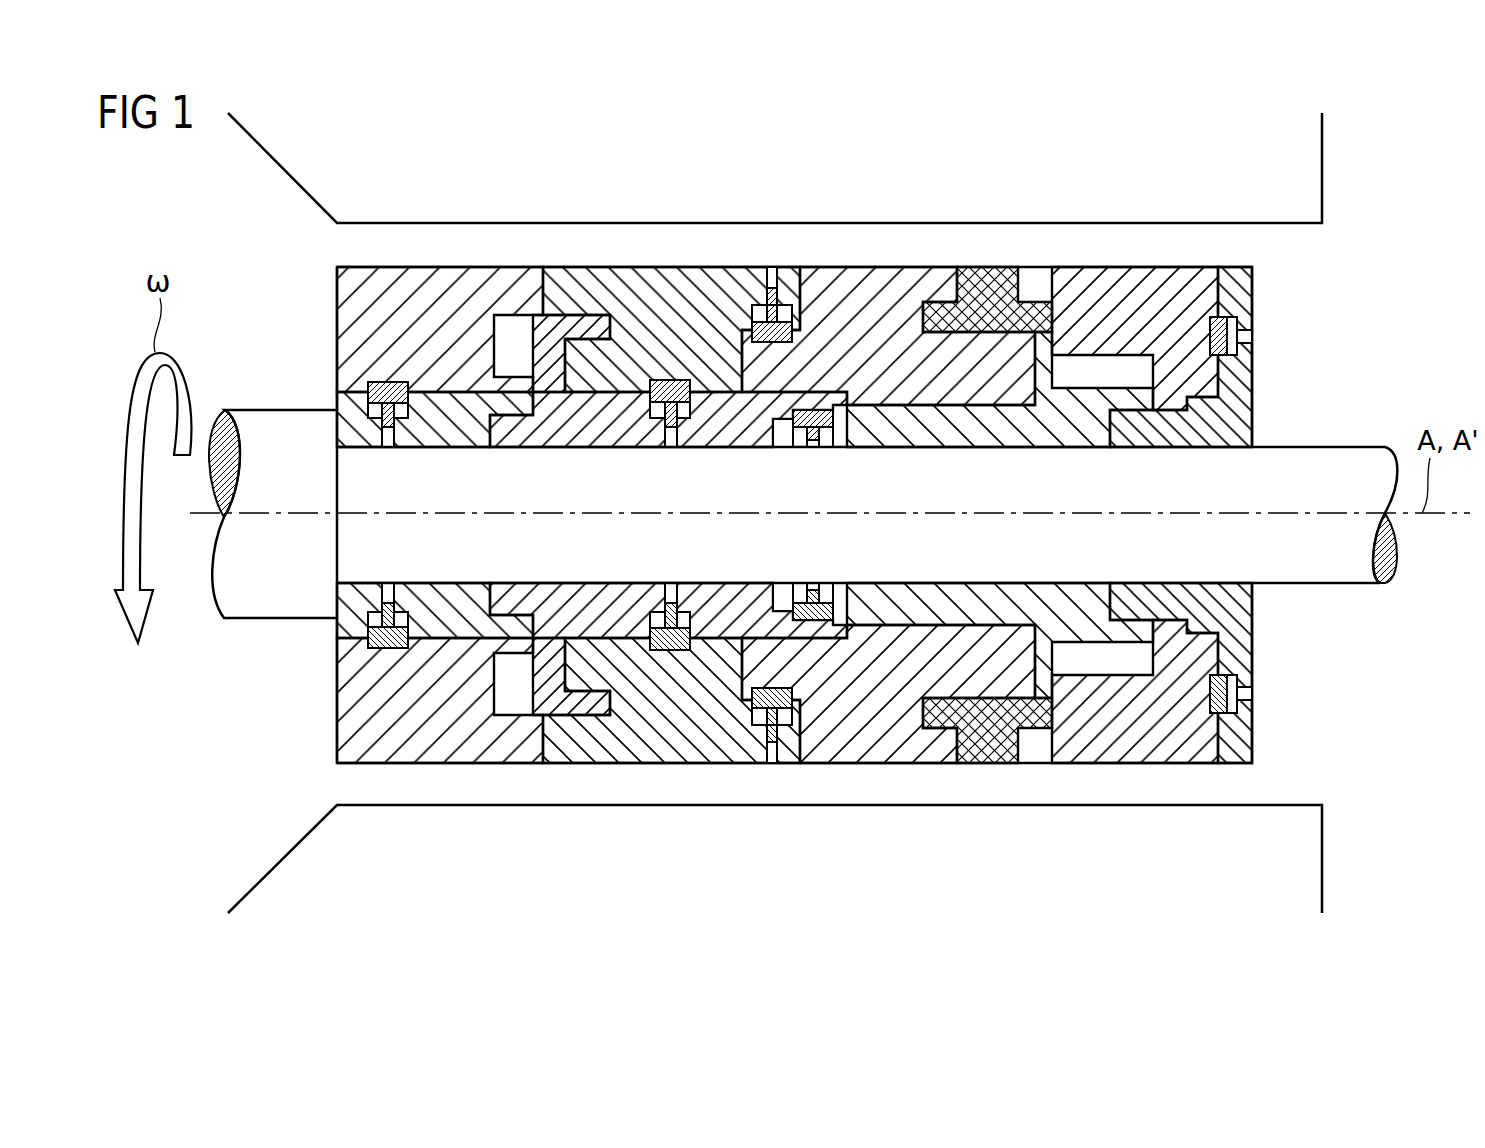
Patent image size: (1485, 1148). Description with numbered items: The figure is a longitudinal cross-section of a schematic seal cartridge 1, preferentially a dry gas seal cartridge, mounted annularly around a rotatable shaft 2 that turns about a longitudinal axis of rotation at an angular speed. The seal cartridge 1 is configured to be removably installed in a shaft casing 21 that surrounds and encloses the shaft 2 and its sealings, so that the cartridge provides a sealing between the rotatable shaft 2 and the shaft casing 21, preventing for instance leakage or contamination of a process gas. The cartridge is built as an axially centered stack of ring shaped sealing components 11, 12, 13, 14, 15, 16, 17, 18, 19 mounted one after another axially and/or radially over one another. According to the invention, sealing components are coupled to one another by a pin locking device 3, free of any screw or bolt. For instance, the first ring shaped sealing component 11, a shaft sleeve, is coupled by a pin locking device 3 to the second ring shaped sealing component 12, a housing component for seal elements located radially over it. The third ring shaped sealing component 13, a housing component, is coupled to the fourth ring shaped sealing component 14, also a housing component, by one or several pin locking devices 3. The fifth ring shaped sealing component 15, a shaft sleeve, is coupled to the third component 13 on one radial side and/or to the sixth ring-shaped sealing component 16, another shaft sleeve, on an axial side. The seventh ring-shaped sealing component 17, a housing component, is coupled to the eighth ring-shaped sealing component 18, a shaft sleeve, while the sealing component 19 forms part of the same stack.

The seal cartridge 1 is at (533, 190).
The rotatable shaft 2 is at (1340, 572).
The pin locking device 3 is at (395, 648).
The first ring shaped sealing component 11 is at (440, 428).
The second ring shaped sealing component 12 is at (430, 292).
The third ring shaped sealing component 13 is at (622, 292).
The fourth ring shaped sealing component 14 is at (843, 292).
The fifth ring shaped sealing component 15 is at (610, 428).
The sixth ring-shaped sealing component 16 is at (1073, 418).
The seventh ring-shaped sealing component 17 is at (1095, 292).
The eighth ring-shaped sealing component 18 is at (1232, 412).
The sealing component 19 is at (975, 292).
The shaft casing 21 is at (1237, 222).